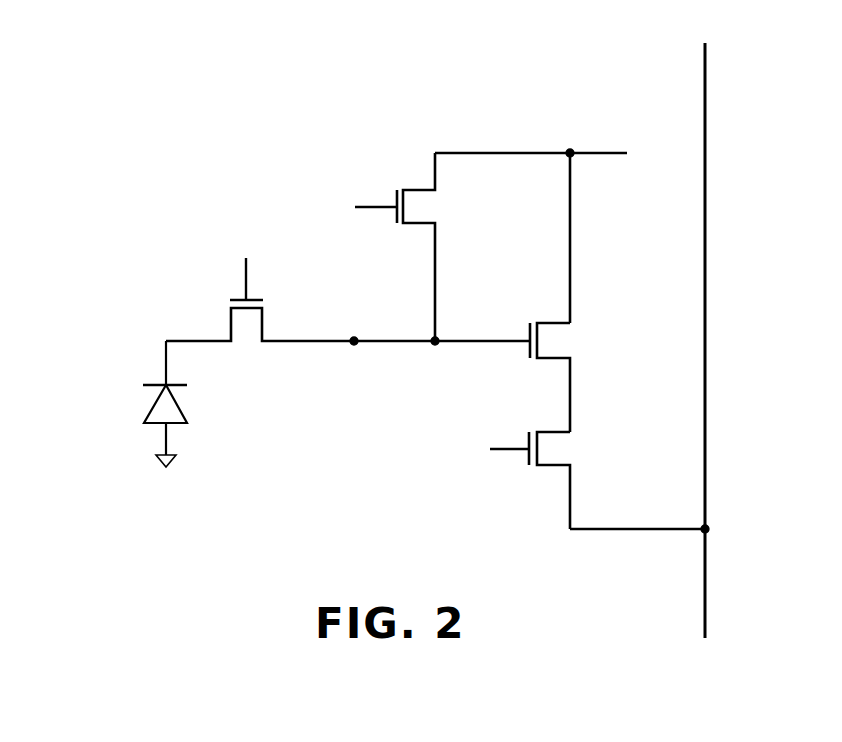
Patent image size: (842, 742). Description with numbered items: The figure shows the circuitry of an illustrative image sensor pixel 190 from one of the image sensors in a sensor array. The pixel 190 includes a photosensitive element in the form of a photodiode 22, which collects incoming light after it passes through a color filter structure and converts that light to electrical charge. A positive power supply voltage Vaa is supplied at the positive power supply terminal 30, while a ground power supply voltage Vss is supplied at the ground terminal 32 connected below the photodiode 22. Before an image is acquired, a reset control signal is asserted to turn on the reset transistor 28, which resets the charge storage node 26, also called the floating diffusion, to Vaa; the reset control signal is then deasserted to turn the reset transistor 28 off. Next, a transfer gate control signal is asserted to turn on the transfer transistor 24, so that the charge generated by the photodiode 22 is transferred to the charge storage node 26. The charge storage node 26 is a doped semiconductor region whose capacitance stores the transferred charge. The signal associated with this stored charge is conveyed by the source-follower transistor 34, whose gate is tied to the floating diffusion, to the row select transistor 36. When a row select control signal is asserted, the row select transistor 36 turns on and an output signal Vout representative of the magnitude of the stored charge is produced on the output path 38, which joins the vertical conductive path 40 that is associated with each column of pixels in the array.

The pixel 190 is at (192, 148).
The photodiode 22 is at (160, 405).
The transfer transistor 24 is at (232, 326).
The charge storage node 26 is at (355, 338).
The reset transistor 28 is at (420, 195).
The positive power supply terminal 30 is at (603, 152).
The ground terminal 32 is at (163, 462).
The source-follower transistor 34 is at (553, 330).
The row select transistor 36 is at (553, 438).
The output path 38 is at (630, 532).
The vertical conductive path 40 is at (706, 584).